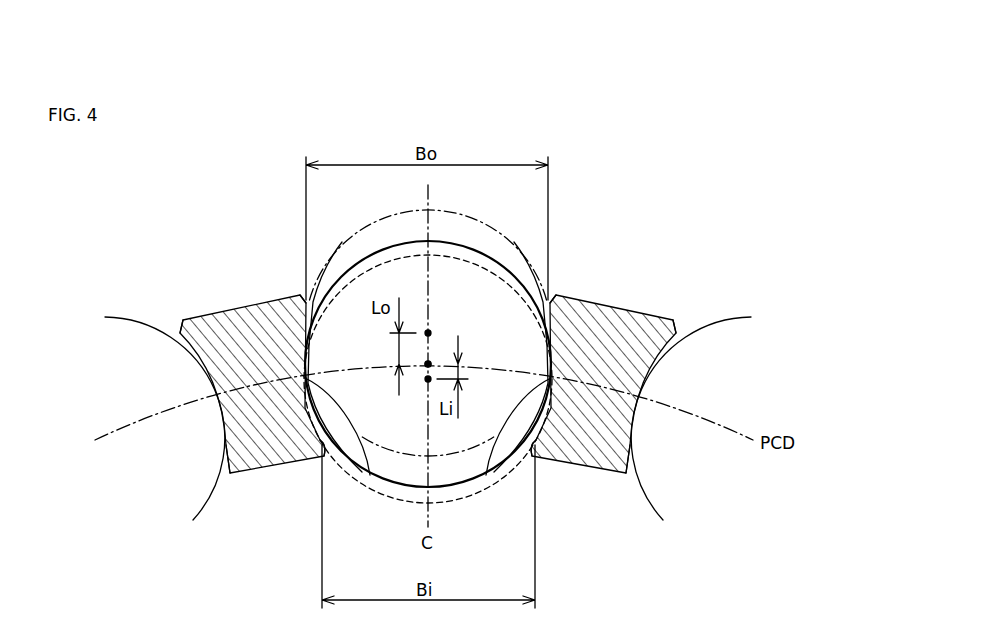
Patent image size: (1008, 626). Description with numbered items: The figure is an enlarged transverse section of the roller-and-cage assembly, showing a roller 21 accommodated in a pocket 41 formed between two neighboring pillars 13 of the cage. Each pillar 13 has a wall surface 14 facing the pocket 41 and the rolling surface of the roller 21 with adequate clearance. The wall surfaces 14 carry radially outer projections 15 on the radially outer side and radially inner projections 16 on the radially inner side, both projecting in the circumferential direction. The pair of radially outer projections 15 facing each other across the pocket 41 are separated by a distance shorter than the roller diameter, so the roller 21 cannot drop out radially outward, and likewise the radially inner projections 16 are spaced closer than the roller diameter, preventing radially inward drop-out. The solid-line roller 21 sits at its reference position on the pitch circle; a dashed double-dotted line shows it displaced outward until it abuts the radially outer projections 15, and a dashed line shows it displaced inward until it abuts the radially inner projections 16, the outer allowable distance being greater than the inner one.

The pillar 13 is at (245, 320).
The wall surface 14 is at (200, 371).
The radially outer projection 15 is at (181, 330).
The radially inner projection 16 is at (226, 470).
The roller 21 is at (443, 225).
The pocket 41 is at (462, 525).